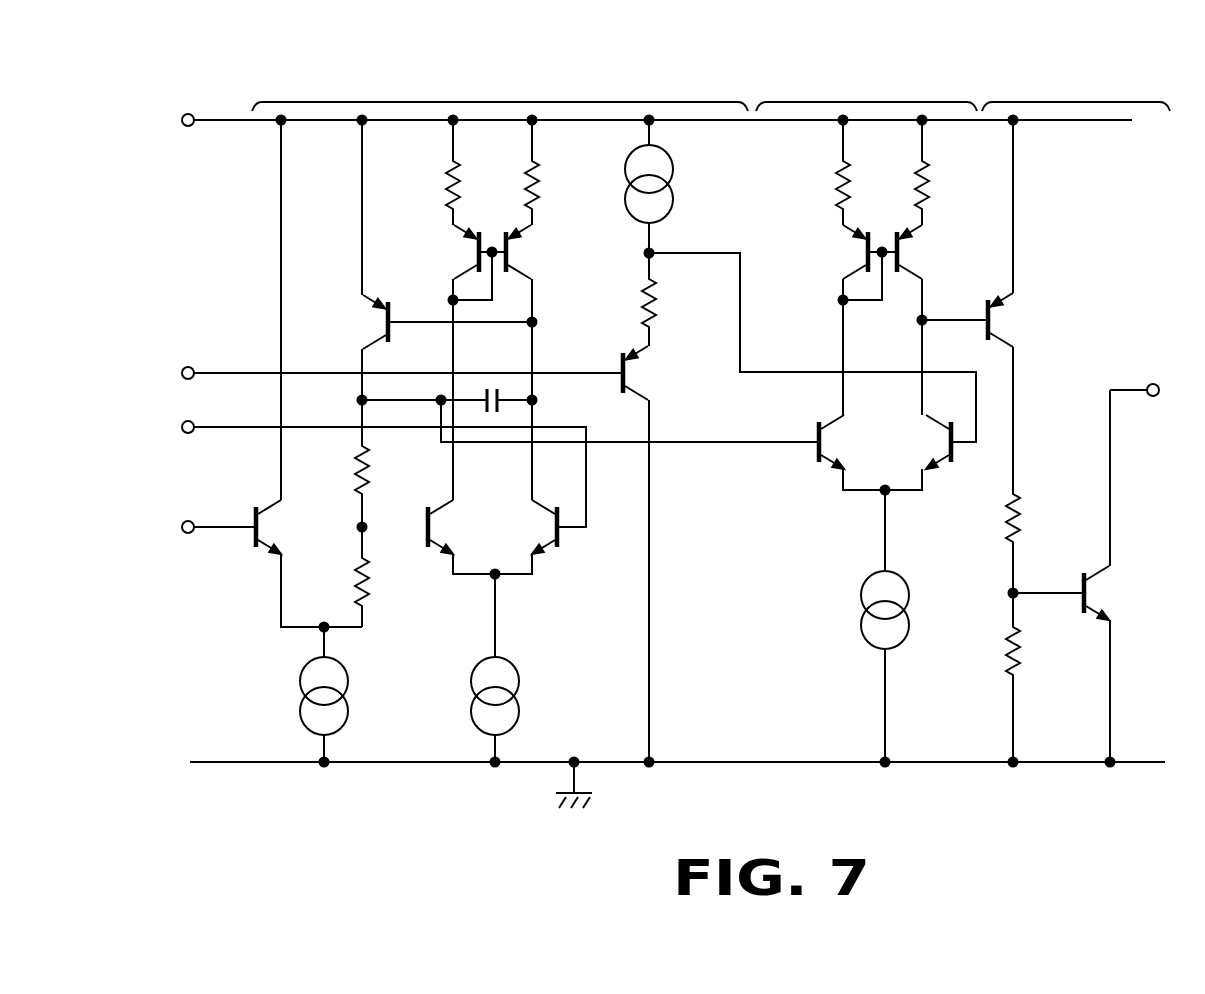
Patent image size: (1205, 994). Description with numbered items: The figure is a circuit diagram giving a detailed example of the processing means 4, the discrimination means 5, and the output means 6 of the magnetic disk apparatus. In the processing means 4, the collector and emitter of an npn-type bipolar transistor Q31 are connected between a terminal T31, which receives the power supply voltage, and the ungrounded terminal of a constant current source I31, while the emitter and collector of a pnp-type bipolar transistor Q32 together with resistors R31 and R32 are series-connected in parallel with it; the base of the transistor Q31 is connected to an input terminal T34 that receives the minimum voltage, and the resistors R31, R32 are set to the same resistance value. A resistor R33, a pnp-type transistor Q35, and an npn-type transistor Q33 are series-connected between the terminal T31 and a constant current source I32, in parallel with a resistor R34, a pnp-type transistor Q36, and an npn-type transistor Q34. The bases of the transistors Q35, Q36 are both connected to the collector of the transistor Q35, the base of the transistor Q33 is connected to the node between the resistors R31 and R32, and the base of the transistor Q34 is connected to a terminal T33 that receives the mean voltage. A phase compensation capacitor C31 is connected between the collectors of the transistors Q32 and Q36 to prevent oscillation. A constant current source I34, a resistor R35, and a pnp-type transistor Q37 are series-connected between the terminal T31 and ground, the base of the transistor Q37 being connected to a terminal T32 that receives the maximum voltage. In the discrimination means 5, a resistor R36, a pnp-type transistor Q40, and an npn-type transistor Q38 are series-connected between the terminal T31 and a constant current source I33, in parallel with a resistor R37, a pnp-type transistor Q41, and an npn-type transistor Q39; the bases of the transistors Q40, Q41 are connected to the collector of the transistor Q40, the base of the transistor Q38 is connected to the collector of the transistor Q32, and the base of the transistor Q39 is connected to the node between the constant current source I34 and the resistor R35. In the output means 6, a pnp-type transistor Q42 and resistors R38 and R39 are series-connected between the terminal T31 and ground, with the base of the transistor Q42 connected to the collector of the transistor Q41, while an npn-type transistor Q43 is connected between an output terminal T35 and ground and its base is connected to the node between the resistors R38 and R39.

The processing means 4 is at (500, 88).
The discrimination means 5 is at (866, 88).
The output means 6 is at (1076, 88).
The terminal T31 is at (154, 120).
The terminal T32 is at (154, 373).
The terminal T33 is at (154, 427).
The input terminal T34 is at (154, 527).
The output terminal T35 is at (1153, 384).
The resistor R31 is at (392, 470).
The resistor R32 is at (392, 582).
The resistor R33 is at (424, 185).
The resistor R34 is at (561, 185).
The resistor R35 is at (621, 303).
The resistor R36 is at (813, 185).
The resistor R37 is at (952, 185).
The resistor R38 is at (1046, 518).
The resistor R39 is at (1046, 651).
The phase compensation capacitor C31 is at (493, 390).
The constant current source I31 is at (364, 696).
The constant current source I32 is at (535, 696).
The constant current source I33 is at (849, 610).
The constant current source I34 is at (682, 184).
The npn-type bipolar transistor Q31 is at (300, 527).
The pnp-type bipolar transistor Q32 is at (342, 322).
The npn-type bipolar transistor Q33 is at (447, 527).
The npn-type bipolar transistor Q34 is at (541, 525).
The pnp-type bipolar transistor Q35 is at (433, 252).
The pnp-type bipolar transistor Q36 is at (551, 252).
The pnp-type bipolar transistor Q37 is at (667, 373).
The npn-type bipolar transistor Q38 is at (837, 443).
The npn-type bipolar transistor Q39 is at (930, 437).
The pnp-type bipolar transistor Q40 is at (822, 252).
The pnp-type bipolar transistor Q41 is at (943, 252).
The pnp-type bipolar transistor Q42 is at (1032, 320).
The npn-type bipolar transistor Q43 is at (1129, 593).